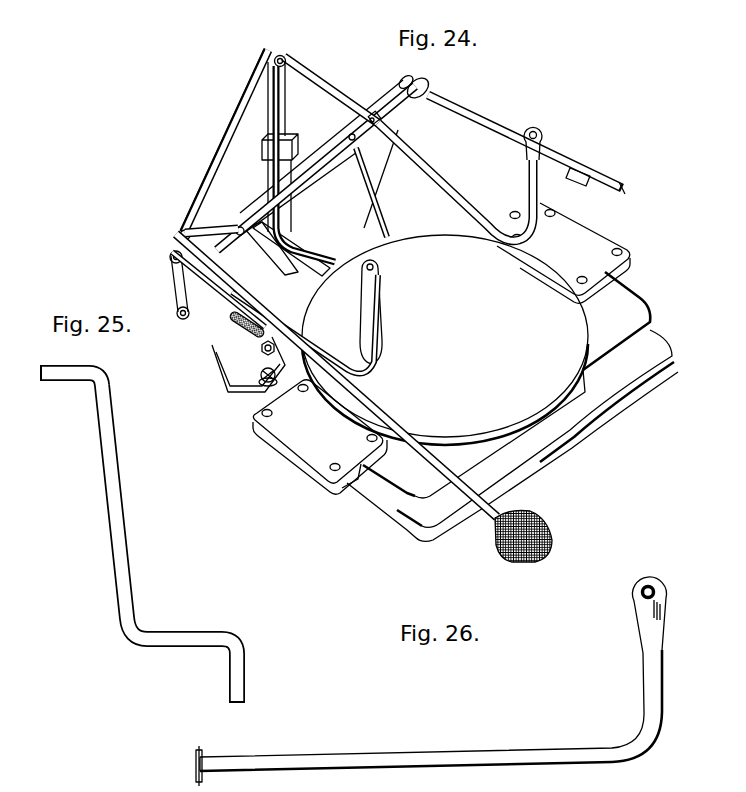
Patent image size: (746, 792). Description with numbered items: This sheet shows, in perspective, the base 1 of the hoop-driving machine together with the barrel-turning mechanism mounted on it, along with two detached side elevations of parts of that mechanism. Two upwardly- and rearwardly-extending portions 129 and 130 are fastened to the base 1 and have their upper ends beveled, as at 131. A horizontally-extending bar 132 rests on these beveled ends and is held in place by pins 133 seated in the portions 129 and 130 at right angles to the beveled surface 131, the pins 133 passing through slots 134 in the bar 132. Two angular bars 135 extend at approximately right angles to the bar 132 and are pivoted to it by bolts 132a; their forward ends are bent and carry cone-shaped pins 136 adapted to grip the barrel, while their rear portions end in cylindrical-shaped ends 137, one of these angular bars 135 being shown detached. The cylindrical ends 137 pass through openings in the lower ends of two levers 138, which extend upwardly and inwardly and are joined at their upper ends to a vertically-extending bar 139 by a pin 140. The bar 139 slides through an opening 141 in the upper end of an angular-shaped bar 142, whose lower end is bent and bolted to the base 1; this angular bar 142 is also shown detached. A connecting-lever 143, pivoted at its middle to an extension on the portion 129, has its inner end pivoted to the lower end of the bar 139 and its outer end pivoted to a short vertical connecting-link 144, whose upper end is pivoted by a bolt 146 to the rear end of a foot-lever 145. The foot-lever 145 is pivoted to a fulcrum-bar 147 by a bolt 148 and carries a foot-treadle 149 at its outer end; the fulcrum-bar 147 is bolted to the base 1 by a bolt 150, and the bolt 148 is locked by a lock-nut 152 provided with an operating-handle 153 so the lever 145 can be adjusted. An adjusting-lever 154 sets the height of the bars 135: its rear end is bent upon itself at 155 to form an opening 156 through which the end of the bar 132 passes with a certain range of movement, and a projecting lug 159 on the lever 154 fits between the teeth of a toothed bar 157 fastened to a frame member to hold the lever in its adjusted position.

In FIG. 24, the base 1 is at (640, 318).
In FIG. 24, the upwardly-extending and rearwardly-extending portion 129 is at (272, 278).
In FIG. 24, the upwardly-extending and rearwardly-extending portion 130 is at (375, 192).
In FIG. 24, the beveled upper end 131 is at (245, 214).
In FIG. 24, the horizontally-extending bar 132 is at (318, 163).
In FIG. 24, the bolt 132a is at (218, 294).
In FIG. 24, the pin 133 is at (352, 136).
In FIG. 24, the slot 134 is at (186, 243).
In FIG. 24, the angular bar 135 is at (440, 184).
In FIG. 26, the angular bar 135 is at (315, 763).
In FIG. 24, the cone-shaped pin 136 is at (537, 130).
In FIG. 26, the cone-shaped pin 136 is at (658, 586).
In FIG. 26, the cylindrical-shaped end 137 is at (193, 765).
In FIG. 24, the lever 138 is at (311, 78).
In FIG. 24, the vertically-extending bar 139 is at (283, 111).
In FIG. 24, the pin 140 is at (284, 56).
In FIG. 24, the opening 141 is at (268, 149).
In FIG. 24, the angular-shaped bar 142 is at (291, 215).
In FIG. 25, the angular-shaped bar 142 is at (115, 496).
In FIG. 24, the connecting-lever 143 is at (175, 292).
In FIG. 24, the connecting-link 144 is at (178, 314).
In FIG. 24, the foot-lever 145 is at (370, 406).
In FIG. 24, the bolt 146 is at (172, 260).
In FIG. 24, the fulcrum-bar 147 is at (250, 373).
In FIG. 24, the bolt 148 is at (257, 346).
In FIG. 24, the foot-treadle 149 is at (552, 532).
In FIG. 24, the bolt 150 is at (273, 383).
In FIG. 24, the lock-nut 152 is at (302, 345).
In FIG. 24, the operating-handle 153 is at (230, 327).
In FIG. 24, the adjusting-lever 154 is at (572, 158).
In FIG. 24, the bent rear end 155 is at (400, 84).
In FIG. 24, the opening 156 is at (426, 88).
In FIG. 24, the bar 157 is at (298, 318).
In FIG. 24, the projecting portion or lug 159 is at (600, 176).